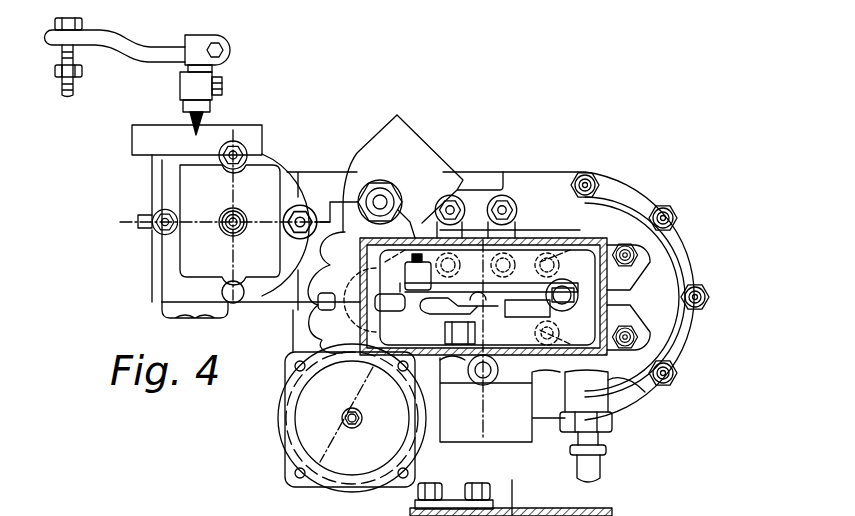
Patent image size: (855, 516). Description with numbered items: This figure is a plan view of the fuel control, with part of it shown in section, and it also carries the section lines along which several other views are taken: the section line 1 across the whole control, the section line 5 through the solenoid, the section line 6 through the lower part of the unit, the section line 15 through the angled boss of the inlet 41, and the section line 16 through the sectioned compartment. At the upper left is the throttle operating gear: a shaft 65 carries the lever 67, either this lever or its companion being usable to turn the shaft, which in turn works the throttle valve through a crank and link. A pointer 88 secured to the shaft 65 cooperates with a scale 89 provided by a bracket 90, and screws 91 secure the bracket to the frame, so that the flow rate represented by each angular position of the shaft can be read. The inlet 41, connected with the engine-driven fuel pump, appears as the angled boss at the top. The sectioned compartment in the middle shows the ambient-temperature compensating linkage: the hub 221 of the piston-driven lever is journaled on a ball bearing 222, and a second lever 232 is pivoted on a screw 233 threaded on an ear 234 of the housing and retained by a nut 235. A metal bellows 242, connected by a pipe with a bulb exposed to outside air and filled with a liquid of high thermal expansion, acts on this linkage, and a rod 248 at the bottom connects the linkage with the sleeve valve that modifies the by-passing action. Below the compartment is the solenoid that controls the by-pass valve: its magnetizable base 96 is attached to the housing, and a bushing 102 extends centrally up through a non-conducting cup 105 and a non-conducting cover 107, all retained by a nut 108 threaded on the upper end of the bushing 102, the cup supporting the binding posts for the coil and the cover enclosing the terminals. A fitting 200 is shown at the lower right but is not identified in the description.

The lever 67 is at (157, 40).
The shaft 65 is at (215, 98).
The pointer 88 is at (193, 128).
The scale 89 is at (158, 125).
The bracket 90 is at (150, 178).
The screws 91 is at (228, 168).
The section line 16— 16 is at (233, 155).
The section line 1— 1 is at (295, 327).
The inlet 41 is at (410, 133).
The section line 15— 15 is at (340, 228).
The section line 6— 6 is at (475, 227).
The section line 5— 5 is at (440, 418).
The ear 234 is at (464, 265).
The lever 232 is at (545, 286).
The nut 235 is at (400, 272).
The ball bearing 222 is at (500, 292).
The screw 233 is at (459, 303).
The hub 221 is at (532, 322).
The metal bellows 242 is at (453, 335).
The magnetizable base 96 is at (290, 470).
The non-conducting cover 107 is at (293, 405).
The non-conducting cup 105 is at (345, 488).
The nut 108 is at (362, 414).
The bushing 102 is at (362, 422).
The fitting 200 is at (572, 510).
The rod 248 is at (514, 503).